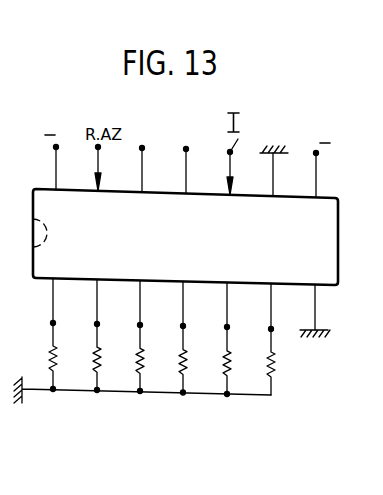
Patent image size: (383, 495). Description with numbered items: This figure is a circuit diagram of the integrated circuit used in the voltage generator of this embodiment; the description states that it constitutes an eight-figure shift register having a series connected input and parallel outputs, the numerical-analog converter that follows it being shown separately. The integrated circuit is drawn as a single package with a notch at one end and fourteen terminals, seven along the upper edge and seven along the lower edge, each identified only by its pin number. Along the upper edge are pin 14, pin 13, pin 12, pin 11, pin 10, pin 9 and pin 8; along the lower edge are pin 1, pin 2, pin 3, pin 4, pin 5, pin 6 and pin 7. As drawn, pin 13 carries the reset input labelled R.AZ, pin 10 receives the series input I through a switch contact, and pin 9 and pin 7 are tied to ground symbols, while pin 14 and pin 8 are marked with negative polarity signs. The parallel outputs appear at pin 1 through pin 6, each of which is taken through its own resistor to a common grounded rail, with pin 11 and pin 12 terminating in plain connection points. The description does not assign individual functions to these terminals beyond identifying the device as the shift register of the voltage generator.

The IC pin 1 (resistor output) 1 is at (53, 323).
The IC pin 2 (resistor output) 2 is at (97, 323).
The IC pin 3 (resistor output) 3 is at (140, 324).
The IC pin 4 (resistor output) 4 is at (183, 327).
The IC pin 5 (resistor output) 5 is at (227, 328).
The IC pin 6 (resistor output) 6 is at (271, 327).
The IC pin 7 (ground) 7 is at (315, 295).
The IC pin 8 (negative supply) 8 is at (316, 187).
The IC pin 9 (ground) 9 is at (273, 187).
The IC pin 10 (switch input I) 10 is at (230, 186).
The IC pin 11 is at (186, 184).
The IC pin 12 is at (142, 183).
The IC pin 13 (reset R.AZ input) 13 is at (98, 182).
The IC pin 14 (negative supply) 14 is at (56, 181).